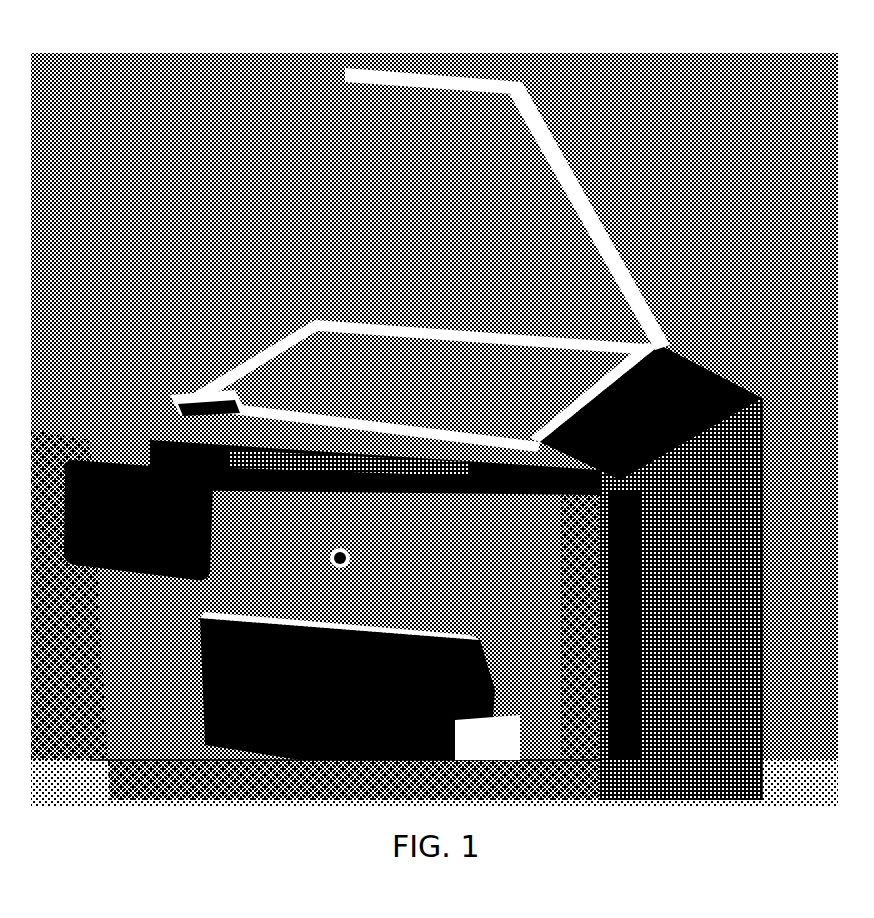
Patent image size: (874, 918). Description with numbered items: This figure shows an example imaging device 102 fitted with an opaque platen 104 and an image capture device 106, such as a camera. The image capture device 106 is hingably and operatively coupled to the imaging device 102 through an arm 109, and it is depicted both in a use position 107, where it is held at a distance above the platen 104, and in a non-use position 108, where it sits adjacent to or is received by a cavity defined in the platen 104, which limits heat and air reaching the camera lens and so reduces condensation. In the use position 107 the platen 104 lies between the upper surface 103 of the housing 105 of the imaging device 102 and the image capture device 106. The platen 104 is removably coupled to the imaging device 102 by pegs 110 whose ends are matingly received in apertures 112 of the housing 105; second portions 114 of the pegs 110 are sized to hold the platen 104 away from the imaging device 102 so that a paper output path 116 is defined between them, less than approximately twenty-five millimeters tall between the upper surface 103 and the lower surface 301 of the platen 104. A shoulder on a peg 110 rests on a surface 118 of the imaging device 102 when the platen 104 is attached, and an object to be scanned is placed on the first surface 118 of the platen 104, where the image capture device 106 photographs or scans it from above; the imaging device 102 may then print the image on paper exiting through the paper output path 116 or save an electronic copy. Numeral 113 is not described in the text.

The imaging device 102 is at (740, 467).
The upper surface 103 is at (716, 386).
The opaque platen 104 is at (305, 328).
The housing 105 is at (745, 555).
The image capture device 106 is at (397, 60).
The use position 107 is at (534, 90).
The non-use position 108 is at (410, 390).
The arm 109 is at (556, 167).
The pegs 110 is at (210, 410).
The apertures 112 is at (560, 484).
The front edge portion 113 is at (500, 470).
The second portions 114 is at (541, 440).
The paper output path 116 is at (350, 466).
The surface 118 is at (385, 332).
The lower surface 301 is at (105, 424).